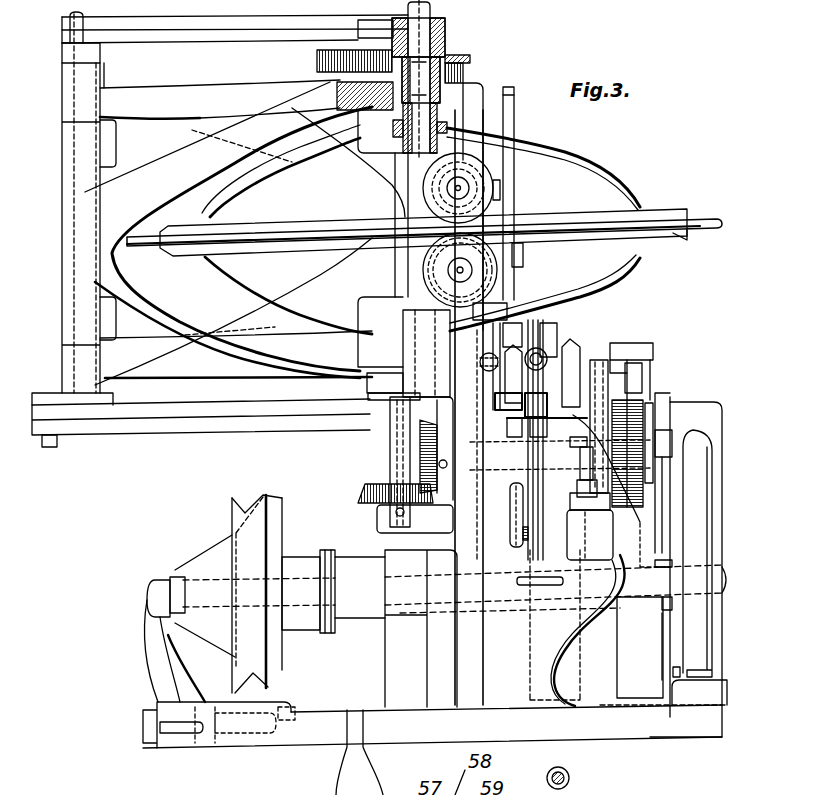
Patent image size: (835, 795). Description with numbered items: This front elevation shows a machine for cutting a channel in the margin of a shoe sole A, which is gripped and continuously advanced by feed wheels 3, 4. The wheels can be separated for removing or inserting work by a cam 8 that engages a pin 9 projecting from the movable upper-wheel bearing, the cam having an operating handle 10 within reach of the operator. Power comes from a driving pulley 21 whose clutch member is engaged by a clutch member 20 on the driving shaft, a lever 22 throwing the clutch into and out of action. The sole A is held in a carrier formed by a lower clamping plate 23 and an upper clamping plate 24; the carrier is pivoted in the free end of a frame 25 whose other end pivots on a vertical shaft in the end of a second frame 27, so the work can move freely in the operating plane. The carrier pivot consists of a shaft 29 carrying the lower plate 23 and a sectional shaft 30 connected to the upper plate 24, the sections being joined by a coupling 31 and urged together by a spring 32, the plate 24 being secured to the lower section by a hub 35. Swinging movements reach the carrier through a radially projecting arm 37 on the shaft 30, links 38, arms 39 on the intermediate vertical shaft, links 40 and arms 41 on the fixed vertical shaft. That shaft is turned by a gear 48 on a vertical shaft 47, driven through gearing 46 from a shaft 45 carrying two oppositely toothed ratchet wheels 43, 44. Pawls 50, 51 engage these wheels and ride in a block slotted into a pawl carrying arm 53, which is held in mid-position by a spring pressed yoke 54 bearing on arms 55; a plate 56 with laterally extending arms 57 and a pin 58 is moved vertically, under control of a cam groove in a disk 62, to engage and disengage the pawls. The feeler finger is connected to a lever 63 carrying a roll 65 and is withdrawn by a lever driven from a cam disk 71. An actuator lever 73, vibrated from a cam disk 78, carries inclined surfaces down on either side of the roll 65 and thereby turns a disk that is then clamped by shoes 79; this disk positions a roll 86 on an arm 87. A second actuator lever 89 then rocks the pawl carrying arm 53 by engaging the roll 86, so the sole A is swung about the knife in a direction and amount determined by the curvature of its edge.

The feed wheel 3 is at (432, 278).
The feed wheel 4 is at (427, 192).
The cam 8 is at (502, 202).
The pin 9 is at (497, 183).
The operating handle 10 is at (513, 123).
The clutch member 20 is at (273, 528).
The driving pulley 21 is at (262, 502).
The lever 22 is at (298, 737).
The clamping plate 23 is at (673, 234).
The clamping plate 24 is at (653, 217).
The frame 25 is at (270, 105).
The second frame 27 is at (167, 103).
The shaft 29 is at (423, 360).
The sectional shaft 30 is at (423, 43).
The coupling 31 is at (470, 58).
The spring 32 is at (463, 72).
The hub 35 is at (512, 108).
The radially projecting arm 37 is at (437, 23).
The links 38 is at (247, 18).
The arms 39 is at (62, 57).
The links 40 is at (163, 37).
The arms 41 is at (358, 42).
The ratchet wheel 43 is at (632, 417).
The ratchet wheel 44 is at (620, 413).
The shaft 45 is at (507, 473).
The gearing 46 is at (368, 494).
The vertical shaft 47 is at (397, 440).
The gear 48 is at (317, 62).
The pawl 50 is at (635, 370).
The pawl 51 is at (612, 372).
The pawl carrying arm 53 is at (592, 350).
The spring pressed yoke 54 is at (588, 485).
The arms 55 is at (588, 452).
The plate 56 is at (630, 403).
The laterally extending arms 57 is at (622, 342).
The pin 58 is at (633, 342).
The disk 62 is at (643, 687).
The lever 63 is at (498, 300).
The roll 65 is at (513, 462).
The disk 71 is at (413, 670).
The actuator lever 73 is at (507, 413).
The disk 78 is at (568, 663).
The clamping shoes 79 is at (553, 528).
The roll 86 is at (621, 491).
The arm 87 is at (552, 317).
The actuator lever 89 is at (572, 310).
The sole A is at (702, 220).